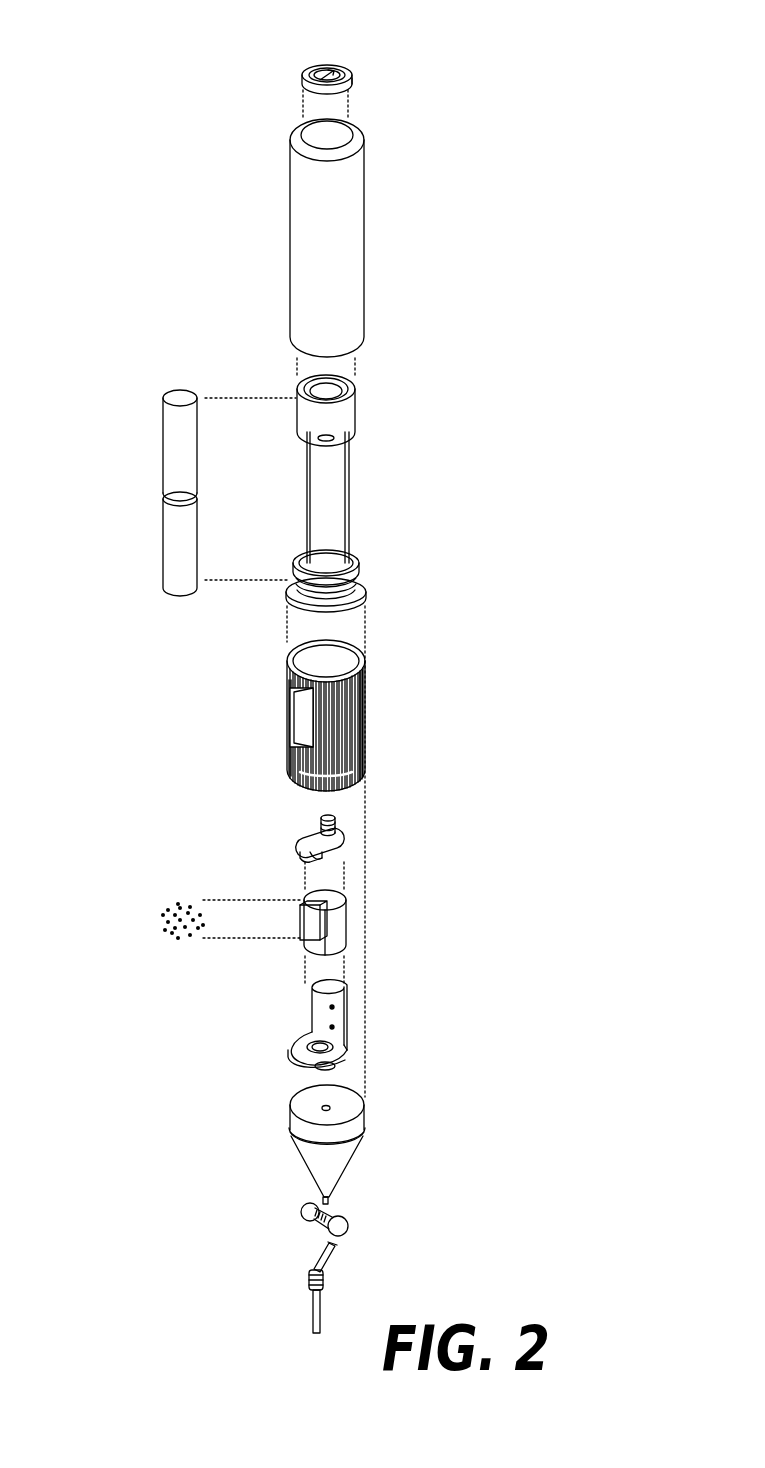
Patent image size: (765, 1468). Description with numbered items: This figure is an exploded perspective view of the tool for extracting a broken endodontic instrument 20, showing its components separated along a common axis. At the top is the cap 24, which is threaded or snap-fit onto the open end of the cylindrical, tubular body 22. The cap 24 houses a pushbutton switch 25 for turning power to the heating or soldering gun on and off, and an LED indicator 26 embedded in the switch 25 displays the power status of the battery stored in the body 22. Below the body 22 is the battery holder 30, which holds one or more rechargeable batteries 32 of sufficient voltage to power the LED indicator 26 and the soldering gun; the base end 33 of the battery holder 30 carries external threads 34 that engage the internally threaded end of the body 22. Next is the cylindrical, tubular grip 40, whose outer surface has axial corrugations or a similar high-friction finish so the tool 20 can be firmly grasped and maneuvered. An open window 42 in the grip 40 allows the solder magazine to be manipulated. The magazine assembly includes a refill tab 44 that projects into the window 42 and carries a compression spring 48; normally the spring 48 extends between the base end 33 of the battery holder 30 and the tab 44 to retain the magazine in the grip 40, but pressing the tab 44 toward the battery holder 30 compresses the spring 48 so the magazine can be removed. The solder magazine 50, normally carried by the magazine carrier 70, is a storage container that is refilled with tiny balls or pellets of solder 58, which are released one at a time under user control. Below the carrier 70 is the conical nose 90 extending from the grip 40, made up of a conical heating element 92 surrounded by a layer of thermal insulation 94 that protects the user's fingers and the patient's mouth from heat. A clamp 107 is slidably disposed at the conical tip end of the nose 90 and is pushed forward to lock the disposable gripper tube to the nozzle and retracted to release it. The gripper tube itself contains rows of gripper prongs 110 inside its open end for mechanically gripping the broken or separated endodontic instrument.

The tool for extracting broken endodontic instrument 20 is at (184, 305).
The body 22 is at (302, 247).
The cap 24 is at (305, 88).
The pushbutton switch 25 is at (352, 80).
The LED indicator 26 is at (317, 72).
The battery holder 30 is at (357, 478).
The batteries 32 is at (170, 447).
The base end 33 is at (360, 603).
The external threads 34 is at (360, 581).
The grip 40 is at (362, 669).
The open window 42 is at (292, 706).
The refill tab 44 is at (298, 852).
The compression spring 48 is at (335, 825).
The solder magazine 50 is at (347, 922).
The solder 58 is at (163, 922).
The magazine carrier 70 is at (350, 1020).
The conical nose 90 is at (405, 1137).
The conical heating element 92 is at (345, 1097).
The thermal insulation 94 is at (290, 1120).
The clamp 107 is at (348, 1222).
The gripper prongs 110 is at (310, 1300).